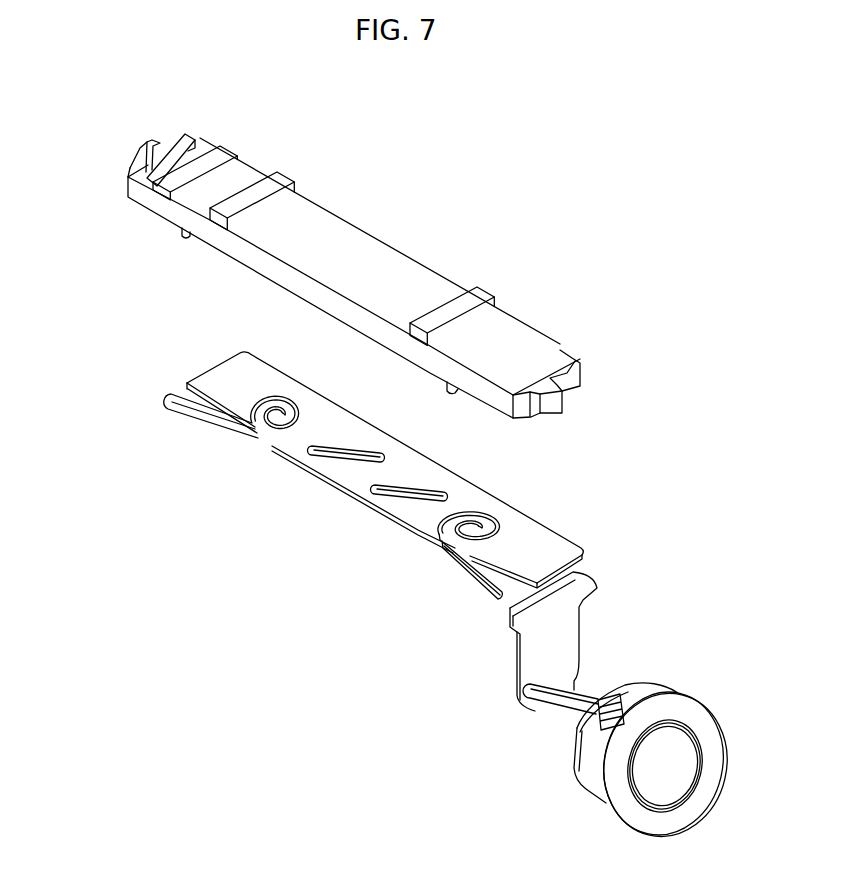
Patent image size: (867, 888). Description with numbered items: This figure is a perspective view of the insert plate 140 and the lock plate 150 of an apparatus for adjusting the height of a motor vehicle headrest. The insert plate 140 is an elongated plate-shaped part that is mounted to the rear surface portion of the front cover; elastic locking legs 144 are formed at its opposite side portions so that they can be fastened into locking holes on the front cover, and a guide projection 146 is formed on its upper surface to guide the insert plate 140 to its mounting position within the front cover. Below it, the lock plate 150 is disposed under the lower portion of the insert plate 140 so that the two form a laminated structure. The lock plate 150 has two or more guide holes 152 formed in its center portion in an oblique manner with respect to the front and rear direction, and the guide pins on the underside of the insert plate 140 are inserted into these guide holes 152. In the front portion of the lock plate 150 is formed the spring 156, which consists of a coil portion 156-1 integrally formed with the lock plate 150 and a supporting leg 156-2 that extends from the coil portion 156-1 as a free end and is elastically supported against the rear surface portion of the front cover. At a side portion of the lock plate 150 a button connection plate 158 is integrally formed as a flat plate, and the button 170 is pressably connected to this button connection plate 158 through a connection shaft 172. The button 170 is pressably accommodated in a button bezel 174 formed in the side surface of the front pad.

The insert plate 140 is at (426, 261).
The elastic locking legs 144 is at (148, 145).
The guide projection 146 is at (281, 176).
The lock plate 150 is at (364, 485).
The guide holes 152 is at (405, 490).
The spring 156 is at (324, 496).
The coil portion 156-1 is at (266, 422).
The supporting leg 156-2 is at (268, 522).
The button connection plate 158 is at (563, 635).
The button 170 is at (677, 747).
The connection shaft 172 is at (550, 713).
The button bezel 174 is at (617, 793).